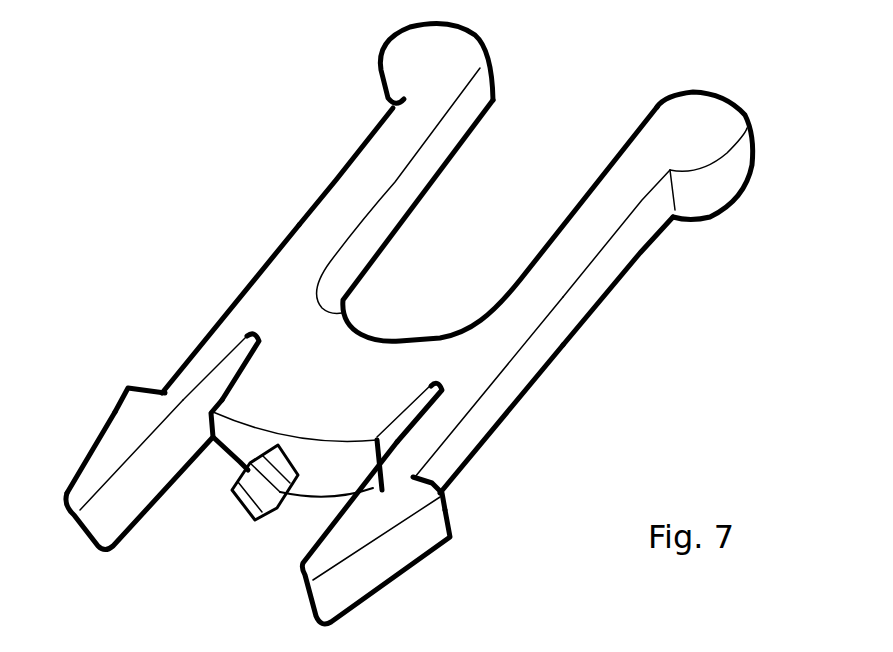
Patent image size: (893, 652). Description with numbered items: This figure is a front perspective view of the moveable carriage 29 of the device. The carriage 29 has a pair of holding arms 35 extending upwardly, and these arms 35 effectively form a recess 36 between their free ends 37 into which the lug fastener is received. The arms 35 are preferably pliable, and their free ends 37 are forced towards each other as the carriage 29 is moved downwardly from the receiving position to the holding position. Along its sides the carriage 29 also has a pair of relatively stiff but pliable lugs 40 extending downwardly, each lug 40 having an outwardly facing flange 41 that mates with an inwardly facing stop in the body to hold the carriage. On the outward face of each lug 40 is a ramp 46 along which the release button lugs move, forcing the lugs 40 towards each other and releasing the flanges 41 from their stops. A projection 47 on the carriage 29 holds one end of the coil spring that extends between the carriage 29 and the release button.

The moveable carriage 29 is at (267, 268).
The holding arms 35 is at (350, 163).
The recess 36 is at (449, 254).
The free ends 37 is at (375, 64).
The lugs 40 is at (87, 537).
The outwardly facing flange 41 is at (133, 387).
The ramp 46 is at (92, 447).
The projection 47 is at (250, 497).